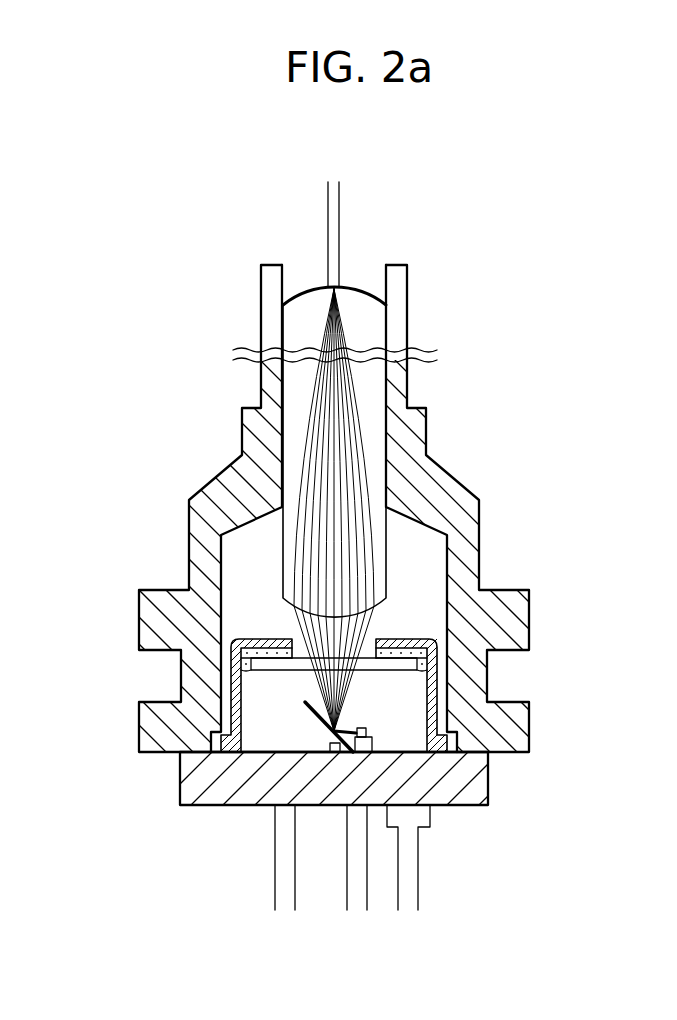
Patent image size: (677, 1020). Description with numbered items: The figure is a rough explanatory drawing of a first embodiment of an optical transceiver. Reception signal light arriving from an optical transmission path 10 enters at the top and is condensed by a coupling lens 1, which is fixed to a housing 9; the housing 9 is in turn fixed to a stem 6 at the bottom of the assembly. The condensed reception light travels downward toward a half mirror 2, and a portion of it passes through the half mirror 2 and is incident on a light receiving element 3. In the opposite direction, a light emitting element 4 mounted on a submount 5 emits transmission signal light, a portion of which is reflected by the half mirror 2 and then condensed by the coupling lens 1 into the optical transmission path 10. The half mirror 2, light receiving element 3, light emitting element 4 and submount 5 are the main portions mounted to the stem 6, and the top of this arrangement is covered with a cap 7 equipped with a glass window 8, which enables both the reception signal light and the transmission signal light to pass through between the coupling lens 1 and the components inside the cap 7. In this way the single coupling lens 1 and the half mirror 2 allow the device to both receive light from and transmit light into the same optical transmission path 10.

The coupling lens 1 is at (387, 397).
The half mirror 2 is at (330, 730).
The light receiving element 3 is at (325, 748).
The light emitting element 4 is at (366, 732).
The submount 5 is at (372, 742).
The stem 6 is at (180, 793).
The cap 7 is at (417, 638).
The glass window 8 is at (437, 653).
The housing 9 is at (440, 463).
The optical transmission path 10 is at (339, 240).